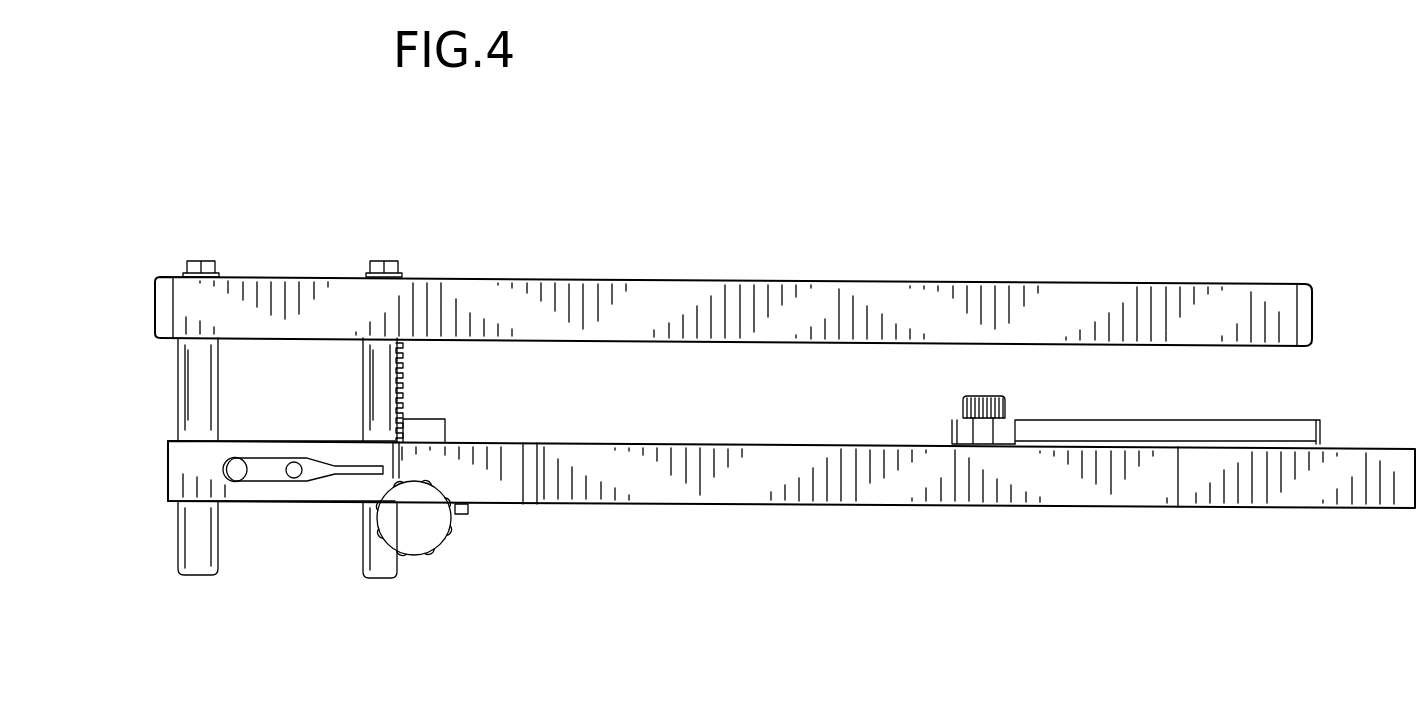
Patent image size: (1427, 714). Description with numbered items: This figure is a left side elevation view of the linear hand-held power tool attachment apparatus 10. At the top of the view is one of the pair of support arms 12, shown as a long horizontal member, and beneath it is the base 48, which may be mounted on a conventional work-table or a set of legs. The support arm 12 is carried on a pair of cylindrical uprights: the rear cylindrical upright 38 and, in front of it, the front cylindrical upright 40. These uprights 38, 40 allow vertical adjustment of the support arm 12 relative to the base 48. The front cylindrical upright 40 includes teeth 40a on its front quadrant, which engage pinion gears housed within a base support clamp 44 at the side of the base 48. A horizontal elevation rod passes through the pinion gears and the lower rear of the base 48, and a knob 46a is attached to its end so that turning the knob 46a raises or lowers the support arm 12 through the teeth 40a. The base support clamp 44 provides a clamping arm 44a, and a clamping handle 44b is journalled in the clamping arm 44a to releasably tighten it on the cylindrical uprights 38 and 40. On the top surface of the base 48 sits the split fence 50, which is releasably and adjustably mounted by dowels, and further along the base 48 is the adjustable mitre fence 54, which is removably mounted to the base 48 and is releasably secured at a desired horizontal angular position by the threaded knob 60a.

The apparatus 10 is at (645, 237).
The support arm 12 is at (793, 287).
The rear cylindrical upright 38 is at (200, 385).
The front cylindrical upright 40 is at (383, 350).
The teeth 40a is at (405, 393).
The base support clamp 44 is at (404, 451).
The clamping arm 44a is at (198, 466).
The clamping handle 44b is at (254, 471).
The knob 46a is at (402, 523).
The base 48 is at (672, 485).
The split fence 50 is at (435, 428).
The adjustable mitre fence 54 is at (1285, 428).
The threaded knob 60a is at (980, 397).